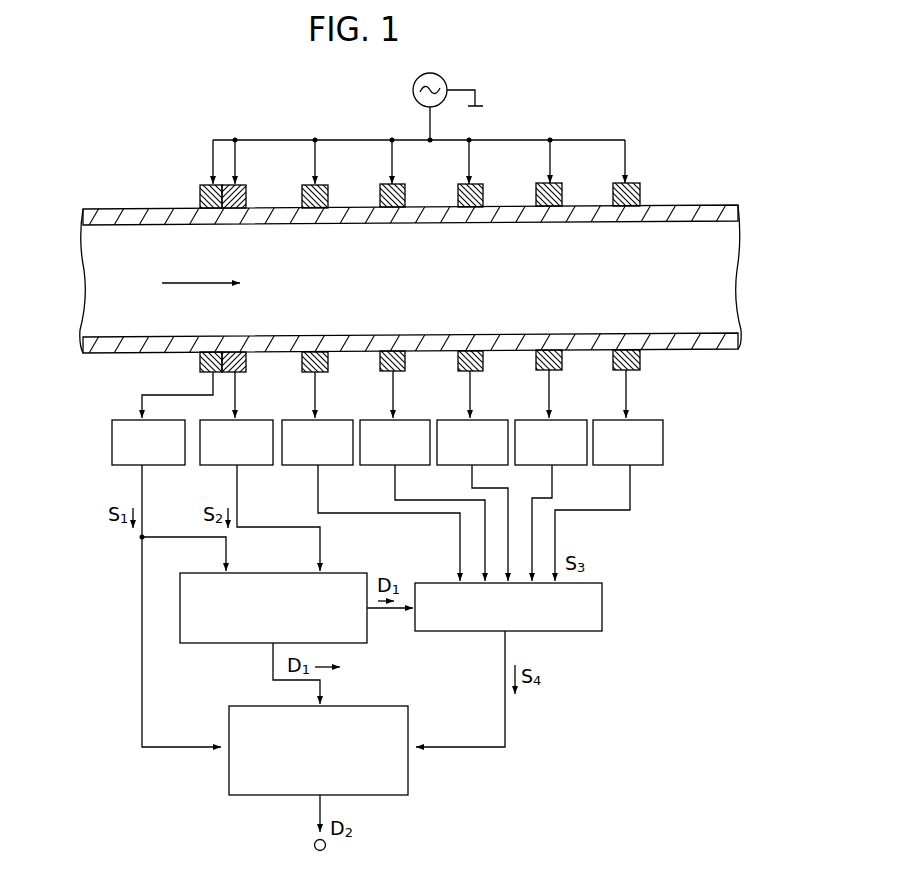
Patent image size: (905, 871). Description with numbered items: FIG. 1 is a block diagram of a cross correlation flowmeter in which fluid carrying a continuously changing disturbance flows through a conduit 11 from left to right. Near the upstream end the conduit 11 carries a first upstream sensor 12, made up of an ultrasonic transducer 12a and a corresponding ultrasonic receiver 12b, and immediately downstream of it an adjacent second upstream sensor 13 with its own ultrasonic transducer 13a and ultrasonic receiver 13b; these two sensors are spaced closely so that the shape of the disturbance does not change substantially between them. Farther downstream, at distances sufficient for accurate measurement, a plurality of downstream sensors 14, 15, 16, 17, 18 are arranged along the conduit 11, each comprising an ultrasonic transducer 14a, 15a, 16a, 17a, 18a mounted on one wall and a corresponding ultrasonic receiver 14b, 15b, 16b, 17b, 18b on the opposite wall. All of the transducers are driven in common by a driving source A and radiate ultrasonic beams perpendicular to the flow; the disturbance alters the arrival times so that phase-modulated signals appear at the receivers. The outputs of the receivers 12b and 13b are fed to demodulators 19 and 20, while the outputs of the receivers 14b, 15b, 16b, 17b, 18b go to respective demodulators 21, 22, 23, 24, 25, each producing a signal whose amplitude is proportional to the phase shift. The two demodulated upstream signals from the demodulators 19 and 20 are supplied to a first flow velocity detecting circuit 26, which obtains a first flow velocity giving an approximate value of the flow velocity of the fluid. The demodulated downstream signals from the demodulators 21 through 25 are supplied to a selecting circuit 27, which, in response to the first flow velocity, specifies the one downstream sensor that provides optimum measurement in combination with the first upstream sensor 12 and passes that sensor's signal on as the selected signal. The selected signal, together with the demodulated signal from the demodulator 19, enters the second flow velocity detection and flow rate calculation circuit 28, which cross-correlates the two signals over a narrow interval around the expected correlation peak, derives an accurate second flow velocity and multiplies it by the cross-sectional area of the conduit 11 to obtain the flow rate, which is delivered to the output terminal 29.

The conduit 11 is at (108, 208).
The common driving source A is at (448, 92).
The first upstream sensor 12 is at (199, 182).
The ultrasonic transducer 12a is at (199, 194).
The ultrasonic receiver 12b is at (198, 367).
The second upstream sensor 13 is at (244, 182).
The ultrasonic transducer 13a is at (247, 192).
The ultrasonic receiver 13b is at (250, 366).
The downstream sensor 14 is at (321, 182).
The ultrasonic transducer 14a is at (329, 192).
The ultrasonic receiver 14b is at (330, 368).
The downstream sensor 15 is at (383, 182).
The ultrasonic transducer 15a is at (407, 192).
The ultrasonic receiver 15b is at (408, 367).
The downstream sensor 16 is at (483, 181).
The ultrasonic transducer 16a is at (485, 192).
The ultrasonic receiver 16b is at (485, 367).
The downstream sensor 17 is at (557, 181).
The ultrasonic transducer 17a is at (563, 192).
The ultrasonic receiver 17b is at (563, 367).
The downstream sensor 18 is at (637, 181).
The ultrasonic transducer 18a is at (641, 192).
The ultrasonic receiver 18b is at (641, 367).
The demodulator 19 is at (111, 443).
The demodulator 20 is at (222, 467).
The demodulator 21 is at (305, 467).
The demodulator 22 is at (380, 467).
The demodulator 23 is at (466, 467).
The demodulator 24 is at (568, 467).
The demodulator 25 is at (647, 467).
The first flow velocity detecting circuit 26 is at (219, 646).
The selecting circuit 27 is at (584, 632).
The second flow velocity detection and flow rate calculation circuit 28 is at (388, 706).
The output terminal 29 is at (314, 845).